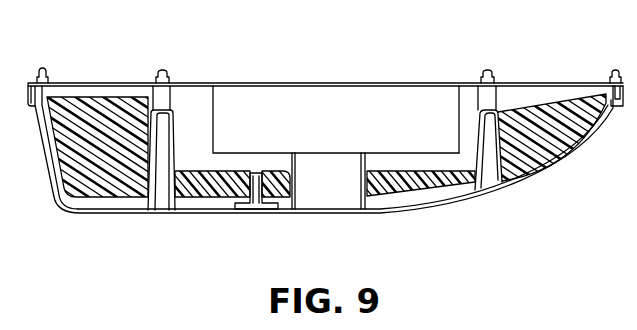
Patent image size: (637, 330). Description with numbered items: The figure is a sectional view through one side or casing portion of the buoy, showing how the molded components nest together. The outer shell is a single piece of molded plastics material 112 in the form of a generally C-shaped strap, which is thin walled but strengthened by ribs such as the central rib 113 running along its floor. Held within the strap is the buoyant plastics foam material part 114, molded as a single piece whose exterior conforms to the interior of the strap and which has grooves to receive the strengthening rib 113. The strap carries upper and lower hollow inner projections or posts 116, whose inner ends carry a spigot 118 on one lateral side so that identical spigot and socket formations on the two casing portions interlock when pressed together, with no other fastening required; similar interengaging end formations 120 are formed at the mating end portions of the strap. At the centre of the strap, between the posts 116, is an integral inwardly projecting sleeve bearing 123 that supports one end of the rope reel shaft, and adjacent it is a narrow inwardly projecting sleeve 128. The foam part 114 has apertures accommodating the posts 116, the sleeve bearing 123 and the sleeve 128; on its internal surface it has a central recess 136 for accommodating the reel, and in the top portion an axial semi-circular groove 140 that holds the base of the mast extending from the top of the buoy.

The molded plastics material strap 112 is at (528, 183).
The rib 113 is at (187, 203).
The buoyant plastics foam material part 114 is at (203, 108).
The hollow inner projection or post 116 is at (176, 140).
The spigot 118 is at (163, 68).
The interengaging end formation 120 is at (42, 67).
The sleeve bearing 123 is at (297, 157).
The narrow inwardly projecting sleeve 128 is at (262, 183).
The central recess 136 is at (459, 125).
The axial semi-circular groove 140 is at (103, 90).